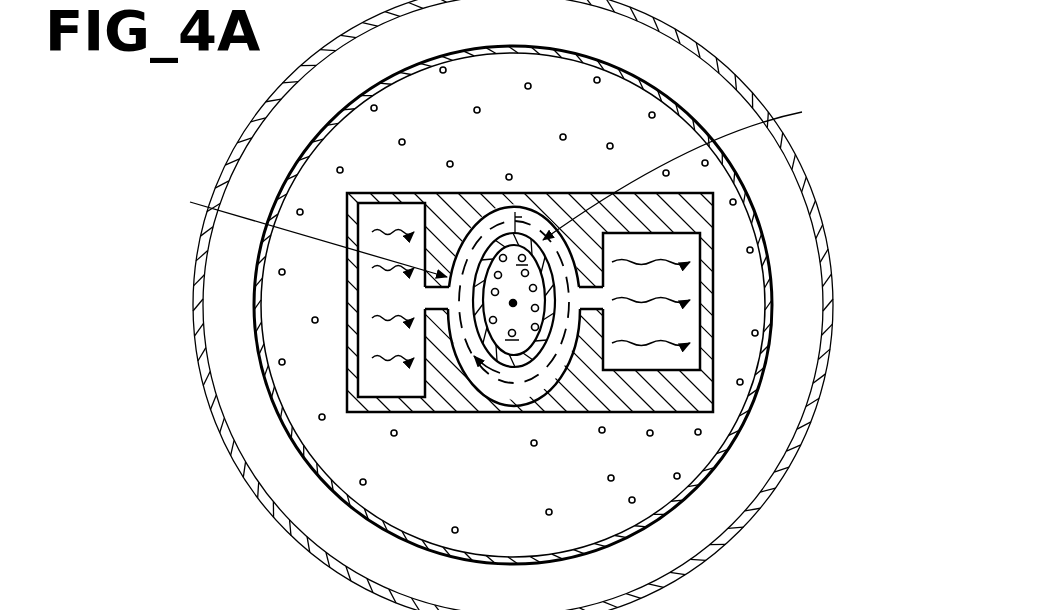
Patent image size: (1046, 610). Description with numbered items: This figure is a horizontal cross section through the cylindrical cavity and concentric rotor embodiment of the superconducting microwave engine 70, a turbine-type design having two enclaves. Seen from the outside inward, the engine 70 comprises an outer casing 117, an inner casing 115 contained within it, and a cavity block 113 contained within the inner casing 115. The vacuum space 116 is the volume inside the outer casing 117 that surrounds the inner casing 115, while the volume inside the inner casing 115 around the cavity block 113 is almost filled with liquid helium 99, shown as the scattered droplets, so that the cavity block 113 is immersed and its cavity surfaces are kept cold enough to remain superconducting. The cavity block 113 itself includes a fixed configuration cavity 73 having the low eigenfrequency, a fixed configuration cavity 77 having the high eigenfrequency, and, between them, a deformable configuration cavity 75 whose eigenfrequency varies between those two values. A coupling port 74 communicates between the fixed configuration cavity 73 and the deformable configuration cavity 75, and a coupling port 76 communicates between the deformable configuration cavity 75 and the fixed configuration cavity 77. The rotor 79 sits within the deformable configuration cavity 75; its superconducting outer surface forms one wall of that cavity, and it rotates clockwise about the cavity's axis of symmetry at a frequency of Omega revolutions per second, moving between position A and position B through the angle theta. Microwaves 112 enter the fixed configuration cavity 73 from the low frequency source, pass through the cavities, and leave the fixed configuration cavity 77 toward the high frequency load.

The engine 70 is at (768, 63).
The fixed configuration cavity 73 is at (387, 384).
The coupling port 74 is at (432, 299).
The deformable configuration cavity 75 is at (495, 223).
The coupling port 76 is at (600, 296).
The fixed configuration cavity 77 is at (702, 236).
The rotor 79 is at (541, 367).
The liquid helium 99 is at (692, 458).
The microwaves 112 is at (383, 321).
The cavity block 113 is at (693, 398).
The inner casing 115 is at (777, 291).
The vacuum space 116 is at (805, 352).
The outer casing 117 is at (826, 237).